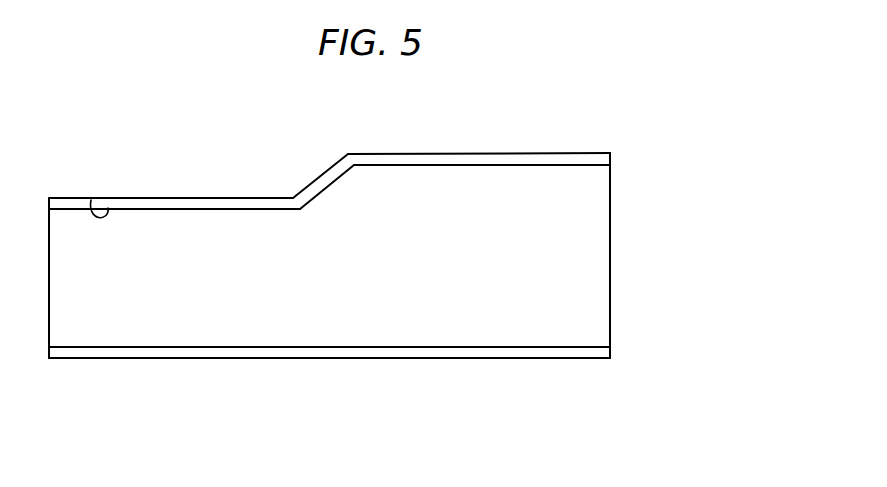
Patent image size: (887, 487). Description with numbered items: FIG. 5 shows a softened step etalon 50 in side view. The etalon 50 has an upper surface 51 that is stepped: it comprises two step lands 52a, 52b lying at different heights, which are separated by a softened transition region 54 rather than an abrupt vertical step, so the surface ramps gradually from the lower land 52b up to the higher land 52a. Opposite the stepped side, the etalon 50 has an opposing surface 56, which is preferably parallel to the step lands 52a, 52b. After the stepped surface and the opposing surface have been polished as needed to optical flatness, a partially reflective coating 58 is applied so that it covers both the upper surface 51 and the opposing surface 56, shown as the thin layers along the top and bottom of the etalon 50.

The softened step etalon 50 is at (662, 252).
The upper surface 51 is at (91, 200).
The step land 52a is at (483, 172).
The step land 52b is at (168, 215).
The softened transition region 54 is at (328, 192).
The opposing surface 56 is at (427, 345).
The partially reflective coating 58 is at (596, 158).